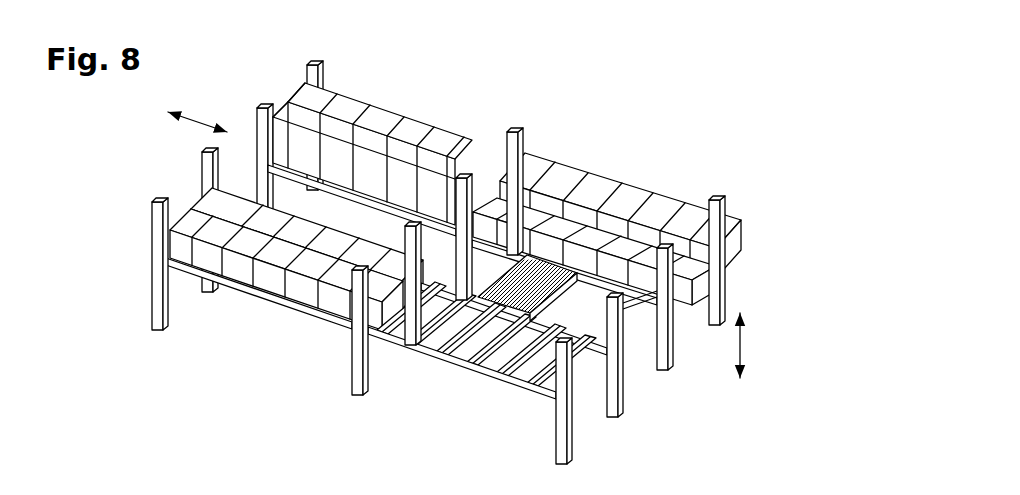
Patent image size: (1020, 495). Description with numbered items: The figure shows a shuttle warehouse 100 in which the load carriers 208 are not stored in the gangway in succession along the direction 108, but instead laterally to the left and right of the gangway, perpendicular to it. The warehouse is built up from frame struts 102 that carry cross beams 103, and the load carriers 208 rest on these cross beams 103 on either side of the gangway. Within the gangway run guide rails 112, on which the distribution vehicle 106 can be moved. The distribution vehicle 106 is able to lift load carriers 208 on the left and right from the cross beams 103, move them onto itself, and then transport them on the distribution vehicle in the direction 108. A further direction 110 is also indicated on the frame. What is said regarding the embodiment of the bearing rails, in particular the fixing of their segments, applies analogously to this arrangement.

The shuttle warehouse 100 is at (476, 261).
The frame strut 102 is at (573, 430).
The cross beam 103 is at (475, 362).
The distribution vehicle 106 is at (541, 258).
The direction 108 is at (200, 112).
The direction 110 is at (740, 346).
The guide rail 112 is at (636, 302).
The piece good 208 is at (419, 121).